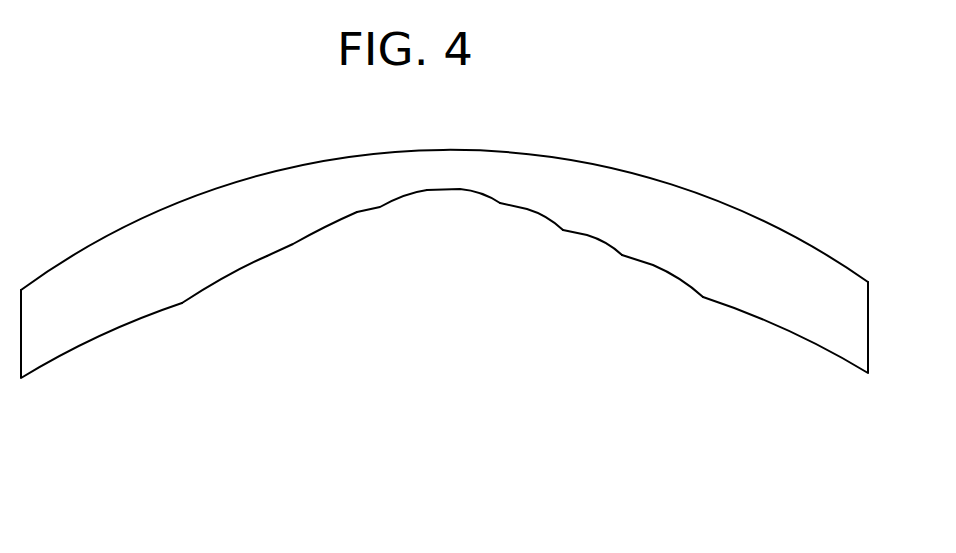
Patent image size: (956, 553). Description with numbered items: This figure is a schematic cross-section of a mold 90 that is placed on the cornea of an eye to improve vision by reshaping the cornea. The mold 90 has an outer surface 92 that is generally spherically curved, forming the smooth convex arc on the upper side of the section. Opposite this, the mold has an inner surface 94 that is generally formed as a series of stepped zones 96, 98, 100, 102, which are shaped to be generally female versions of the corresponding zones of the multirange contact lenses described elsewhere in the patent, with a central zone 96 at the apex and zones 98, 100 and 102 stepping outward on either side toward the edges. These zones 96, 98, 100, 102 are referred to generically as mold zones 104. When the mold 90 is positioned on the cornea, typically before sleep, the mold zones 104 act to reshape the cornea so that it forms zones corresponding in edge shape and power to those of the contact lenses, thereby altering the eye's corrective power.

The mold 90 is at (188, 102).
The outer surface 92 is at (142, 218).
The inner surface 94 is at (187, 389).
The zone 96 is at (428, 190).
The zone 98 is at (358, 211).
The zone 100 is at (294, 244).
The zone 102 is at (217, 282).
The mold zones 104 is at (423, 426).